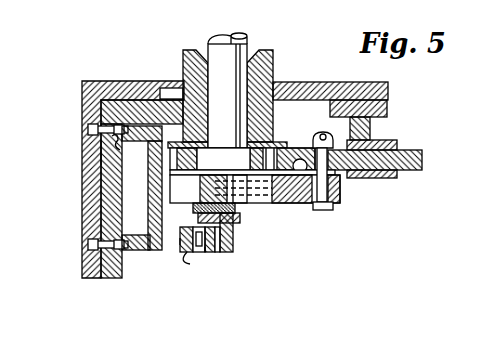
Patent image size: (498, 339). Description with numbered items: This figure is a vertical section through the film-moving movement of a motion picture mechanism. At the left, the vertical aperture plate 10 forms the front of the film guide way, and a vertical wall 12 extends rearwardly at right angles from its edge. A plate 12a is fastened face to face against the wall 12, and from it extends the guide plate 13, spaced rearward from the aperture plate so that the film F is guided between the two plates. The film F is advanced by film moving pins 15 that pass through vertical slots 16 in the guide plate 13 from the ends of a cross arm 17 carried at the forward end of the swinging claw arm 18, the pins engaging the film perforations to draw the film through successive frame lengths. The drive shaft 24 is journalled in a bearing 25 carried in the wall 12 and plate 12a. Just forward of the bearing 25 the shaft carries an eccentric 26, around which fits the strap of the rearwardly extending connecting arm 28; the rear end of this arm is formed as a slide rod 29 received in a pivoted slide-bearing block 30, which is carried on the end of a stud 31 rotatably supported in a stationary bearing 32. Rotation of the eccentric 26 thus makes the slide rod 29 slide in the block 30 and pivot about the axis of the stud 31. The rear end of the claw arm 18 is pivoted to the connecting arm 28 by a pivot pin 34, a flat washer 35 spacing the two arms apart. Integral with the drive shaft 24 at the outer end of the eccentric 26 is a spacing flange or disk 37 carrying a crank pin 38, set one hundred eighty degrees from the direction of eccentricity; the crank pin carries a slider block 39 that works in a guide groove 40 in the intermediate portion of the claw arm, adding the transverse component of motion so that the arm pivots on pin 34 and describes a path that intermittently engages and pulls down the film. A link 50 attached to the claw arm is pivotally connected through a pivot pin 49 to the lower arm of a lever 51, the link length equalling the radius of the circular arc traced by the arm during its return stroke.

The aperture plate 10 is at (90, 108).
The vertical wall 12 is at (318, 88).
The plate 12a is at (125, 108).
The guide plate 13 is at (112, 176).
The film moving pins 15 is at (90, 129).
The vertical slots 16 is at (120, 142).
The cross arm 17 is at (156, 222).
The claw arm 18 is at (280, 200).
The drive shaft 24 is at (220, 90).
The bearing 25 is at (213, 40).
The eccentric 26 is at (262, 200).
The connecting arm 28 is at (298, 190).
The slide rod 29 is at (370, 178).
The slide-bearing block 30 is at (393, 178).
The stud 31 is at (370, 136).
The stationary bearing 32 is at (370, 128).
The pivot pin 34 is at (307, 150).
The flat washer 35 is at (337, 203).
The spacing flange or disk 37 is at (245, 203).
The crank pin 38 is at (195, 196).
The slider block 39 is at (240, 178).
The guide groove 40 is at (255, 203).
The pivot pin 49 is at (193, 252).
The link 50 is at (203, 252).
The lever 51 is at (182, 243).
The film F is at (100, 153).